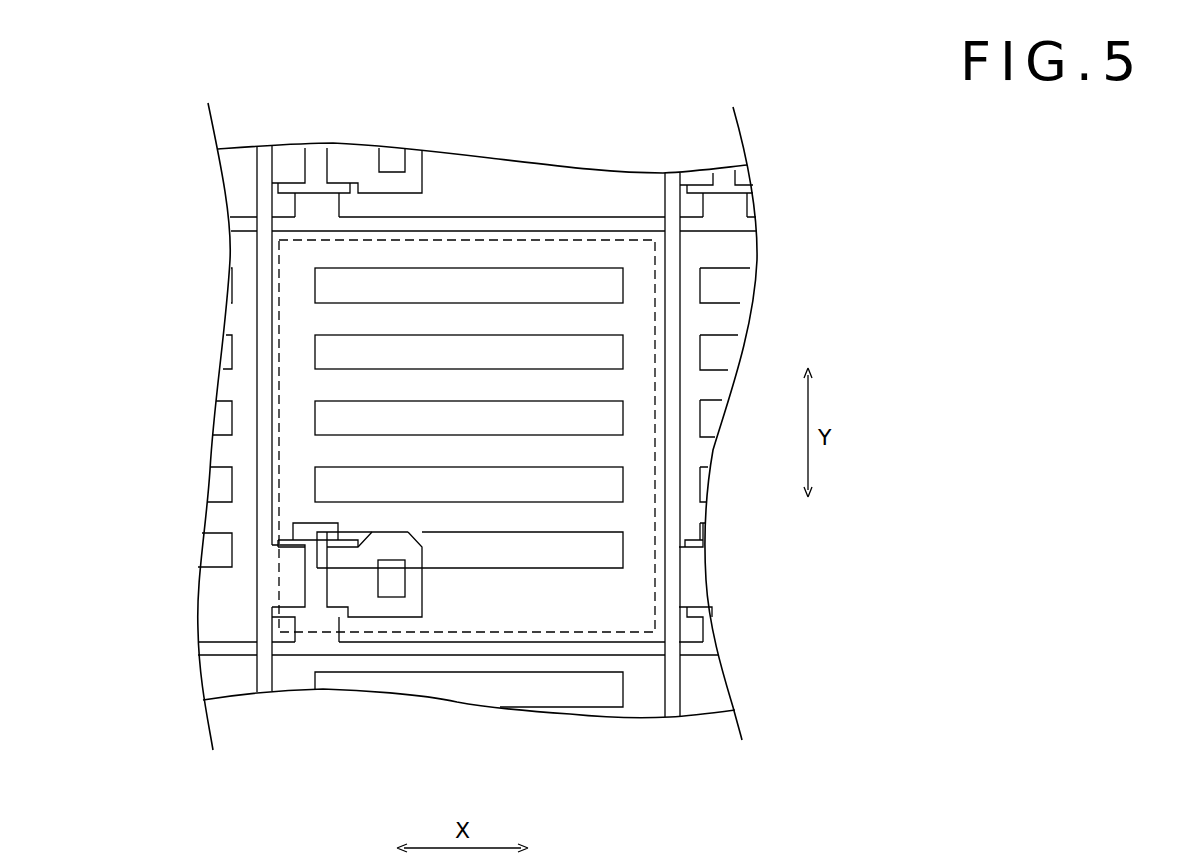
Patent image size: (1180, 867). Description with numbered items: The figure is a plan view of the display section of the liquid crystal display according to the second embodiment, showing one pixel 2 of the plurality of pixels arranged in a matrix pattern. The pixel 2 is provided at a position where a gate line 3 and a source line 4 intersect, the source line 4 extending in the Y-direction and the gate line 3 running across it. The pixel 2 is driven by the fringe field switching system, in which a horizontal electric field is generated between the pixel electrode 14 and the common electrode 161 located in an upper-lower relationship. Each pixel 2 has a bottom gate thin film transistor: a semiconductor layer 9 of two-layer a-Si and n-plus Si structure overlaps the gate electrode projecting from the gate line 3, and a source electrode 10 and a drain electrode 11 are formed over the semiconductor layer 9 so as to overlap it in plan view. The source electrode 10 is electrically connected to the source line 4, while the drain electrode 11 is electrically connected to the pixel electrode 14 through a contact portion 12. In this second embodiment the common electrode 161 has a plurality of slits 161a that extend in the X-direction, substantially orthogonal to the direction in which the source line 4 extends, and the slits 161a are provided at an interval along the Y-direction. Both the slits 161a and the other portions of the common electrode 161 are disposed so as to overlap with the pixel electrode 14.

The pixel 2 is at (575, 613).
The gate line 3 is at (503, 648).
The source line 4 is at (265, 672).
The semiconductor layer 9 is at (313, 600).
The source electrode 10 is at (288, 592).
The drain electrode 11 is at (352, 592).
The contact portion 12 is at (394, 578).
The pixel electrode 14 is at (635, 237).
The common electrode 161 is at (602, 205).
The slit 161a is at (350, 470).